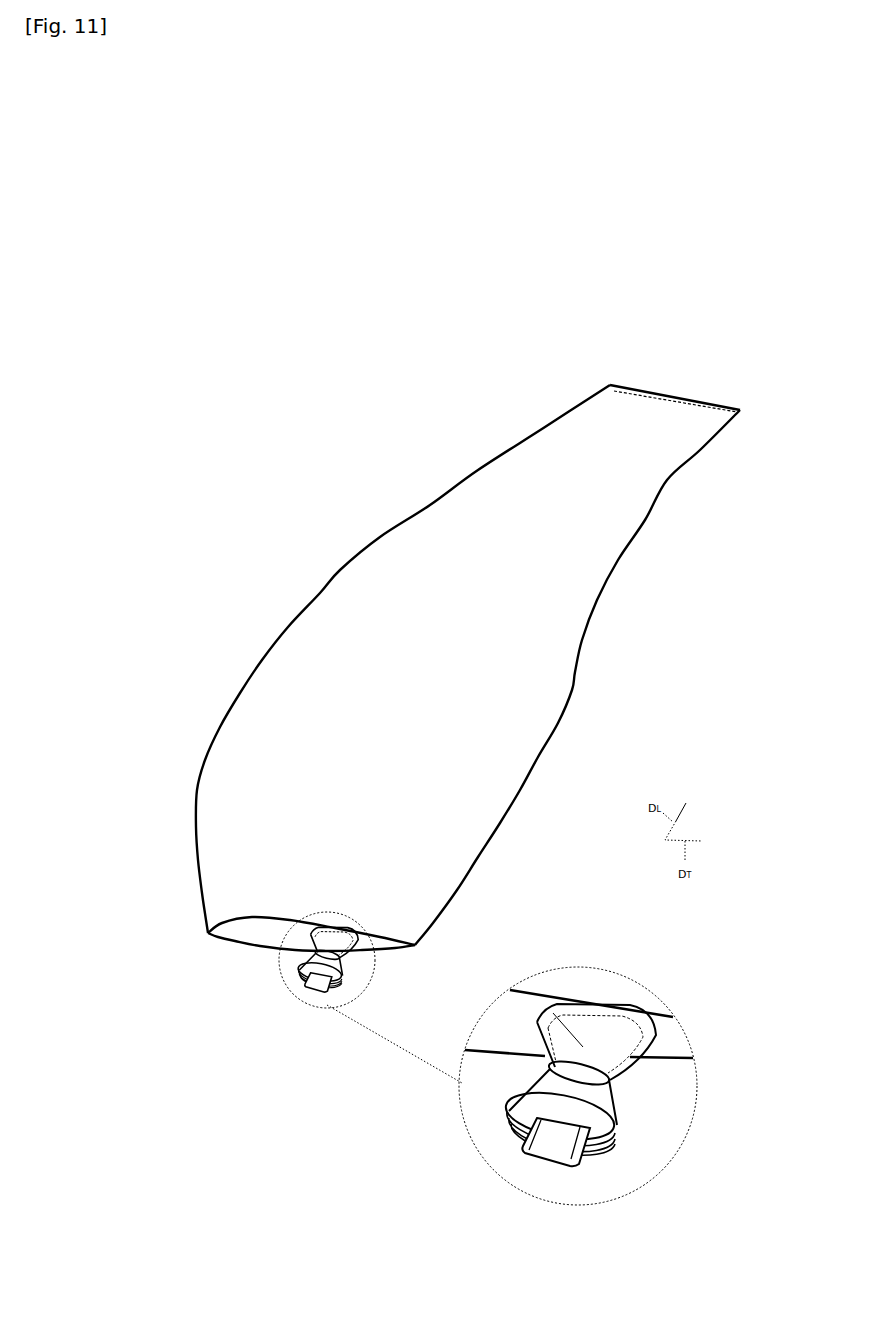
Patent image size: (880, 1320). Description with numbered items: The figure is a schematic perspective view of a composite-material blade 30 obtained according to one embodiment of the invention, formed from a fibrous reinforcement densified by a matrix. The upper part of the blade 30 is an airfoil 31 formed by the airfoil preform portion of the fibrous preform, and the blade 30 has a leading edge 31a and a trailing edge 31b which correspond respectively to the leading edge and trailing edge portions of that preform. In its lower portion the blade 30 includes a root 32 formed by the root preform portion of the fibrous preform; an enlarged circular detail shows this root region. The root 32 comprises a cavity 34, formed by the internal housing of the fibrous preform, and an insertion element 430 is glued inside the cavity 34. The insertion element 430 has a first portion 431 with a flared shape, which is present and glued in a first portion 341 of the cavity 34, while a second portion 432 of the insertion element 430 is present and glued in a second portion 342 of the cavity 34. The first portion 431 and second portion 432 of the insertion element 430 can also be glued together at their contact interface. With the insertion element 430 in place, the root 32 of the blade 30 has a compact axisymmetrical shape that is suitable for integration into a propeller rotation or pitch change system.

The blade 30 is at (468, 668).
The airfoil 31 is at (468, 668).
The leading edge 31a is at (313, 599).
The trailing edge 31b is at (578, 672).
The root 32 is at (518, 1064).
The cavity 34 is at (518, 1064).
The first portion of the cavity 341 is at (623, 1090).
The second portion of the cavity 342 is at (535, 1018).
The insertion element 430 is at (592, 1158).
The first portion of the insertion element 431 is at (522, 1135).
The second portion of the insertion element 432 is at (540, 1048).